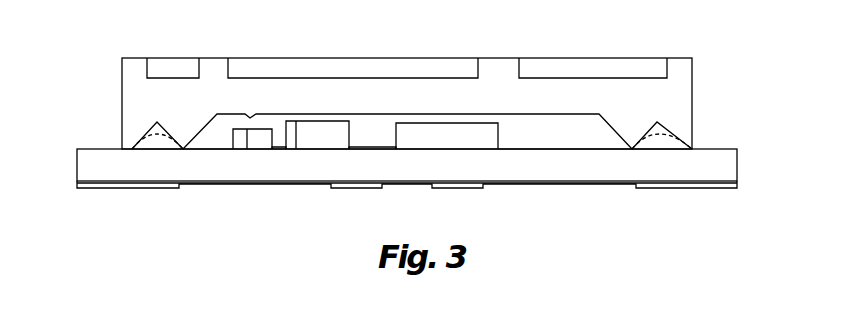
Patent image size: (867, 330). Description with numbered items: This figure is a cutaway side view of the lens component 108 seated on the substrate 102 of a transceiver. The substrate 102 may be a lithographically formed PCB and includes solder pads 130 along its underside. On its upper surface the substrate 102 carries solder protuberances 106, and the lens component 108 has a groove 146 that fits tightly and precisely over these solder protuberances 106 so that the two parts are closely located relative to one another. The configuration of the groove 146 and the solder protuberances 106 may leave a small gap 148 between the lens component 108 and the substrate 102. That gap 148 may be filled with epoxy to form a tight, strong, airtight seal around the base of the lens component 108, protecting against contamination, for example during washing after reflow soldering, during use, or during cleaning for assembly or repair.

The substrate 102 is at (656, 180).
The solder protuberances 106 is at (147, 141).
The lens component 108 is at (628, 108).
The solder pads 130 is at (125, 188).
The groove 146 is at (147, 121).
The gap 148 is at (698, 147).